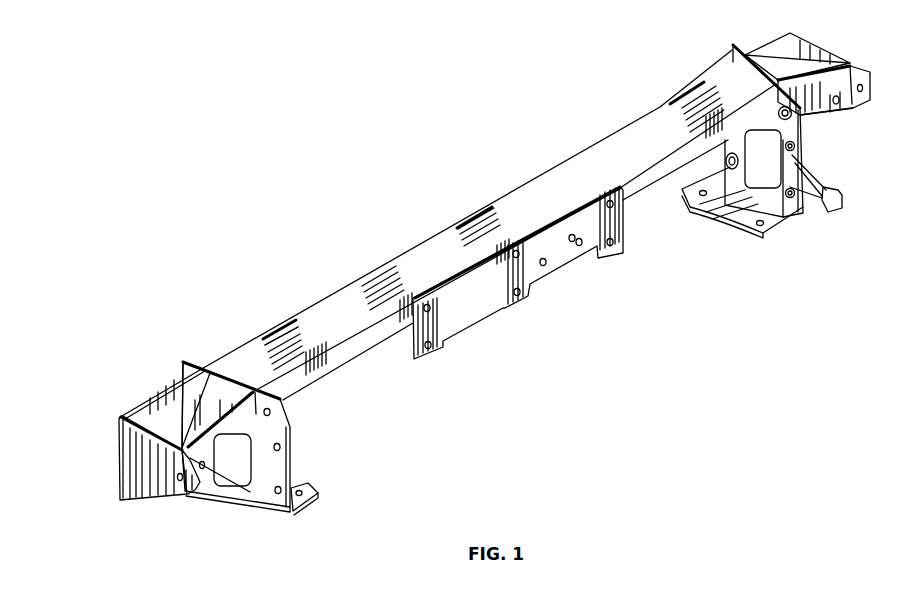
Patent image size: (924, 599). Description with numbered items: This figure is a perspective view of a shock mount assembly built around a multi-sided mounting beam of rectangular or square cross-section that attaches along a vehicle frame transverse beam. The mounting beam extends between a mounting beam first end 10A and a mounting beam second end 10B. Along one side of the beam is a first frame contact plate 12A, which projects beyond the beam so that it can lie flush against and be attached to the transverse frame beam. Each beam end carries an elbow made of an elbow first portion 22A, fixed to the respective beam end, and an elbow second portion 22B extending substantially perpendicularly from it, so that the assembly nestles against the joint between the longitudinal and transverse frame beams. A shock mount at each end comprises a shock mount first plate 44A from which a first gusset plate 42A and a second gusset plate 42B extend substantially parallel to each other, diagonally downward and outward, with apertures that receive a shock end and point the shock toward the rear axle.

The mounting beam first end 10A is at (722, 77).
The mounting beam second end 10B is at (237, 357).
The first frame contact plate 12A is at (562, 260).
The elbow first portion 22A is at (267, 473).
The elbow second portion 22B is at (300, 487).
The first gusset plate 42A is at (200, 480).
The second gusset plate 42B is at (143, 482).
The shock mount first plate 44A is at (140, 420).